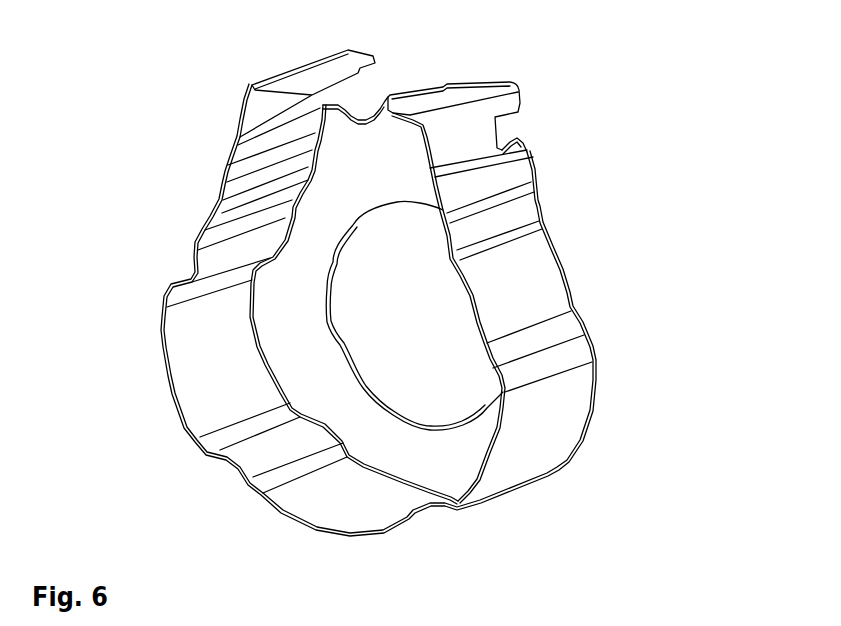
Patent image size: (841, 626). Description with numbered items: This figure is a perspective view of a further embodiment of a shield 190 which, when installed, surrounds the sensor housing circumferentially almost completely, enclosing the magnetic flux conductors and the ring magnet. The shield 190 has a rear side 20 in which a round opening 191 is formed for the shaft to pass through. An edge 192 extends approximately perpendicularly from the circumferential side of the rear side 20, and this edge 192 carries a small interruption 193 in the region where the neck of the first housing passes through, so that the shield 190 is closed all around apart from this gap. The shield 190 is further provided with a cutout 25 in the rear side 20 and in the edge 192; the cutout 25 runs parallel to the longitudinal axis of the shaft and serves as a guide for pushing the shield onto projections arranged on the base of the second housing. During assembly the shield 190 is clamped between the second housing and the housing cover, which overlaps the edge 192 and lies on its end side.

The shield 190 is at (597, 178).
The round opening 191 is at (480, 418).
The edge 192 is at (567, 393).
The interruption 193 is at (463, 83).
The cutout 25 is at (375, 63).
The rear side 20 is at (460, 460).